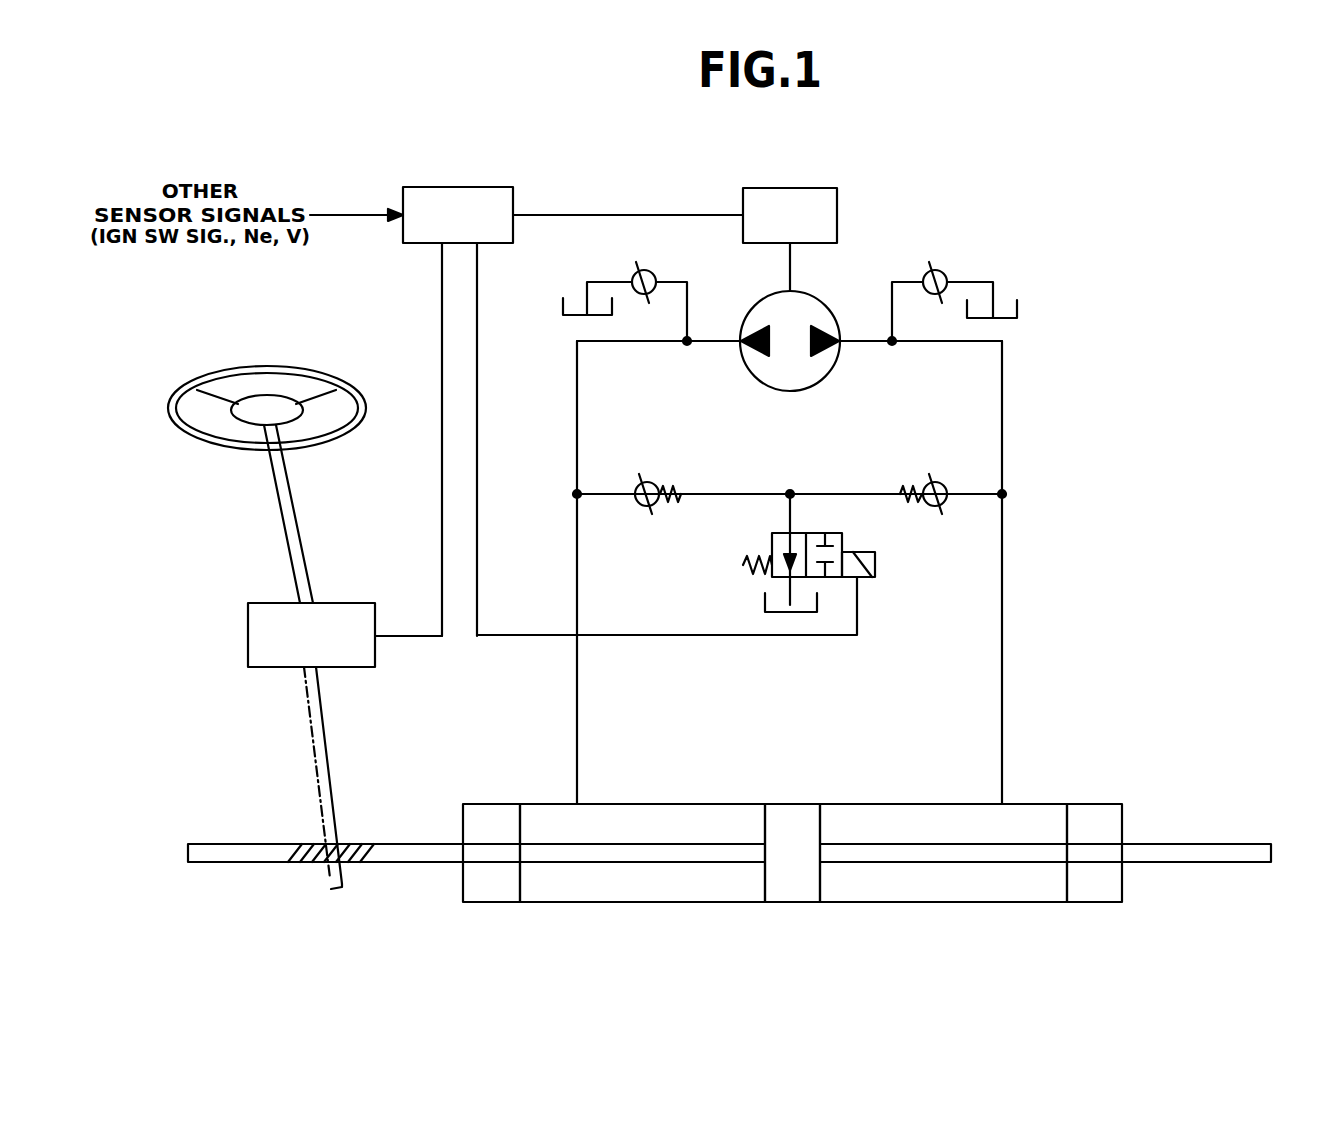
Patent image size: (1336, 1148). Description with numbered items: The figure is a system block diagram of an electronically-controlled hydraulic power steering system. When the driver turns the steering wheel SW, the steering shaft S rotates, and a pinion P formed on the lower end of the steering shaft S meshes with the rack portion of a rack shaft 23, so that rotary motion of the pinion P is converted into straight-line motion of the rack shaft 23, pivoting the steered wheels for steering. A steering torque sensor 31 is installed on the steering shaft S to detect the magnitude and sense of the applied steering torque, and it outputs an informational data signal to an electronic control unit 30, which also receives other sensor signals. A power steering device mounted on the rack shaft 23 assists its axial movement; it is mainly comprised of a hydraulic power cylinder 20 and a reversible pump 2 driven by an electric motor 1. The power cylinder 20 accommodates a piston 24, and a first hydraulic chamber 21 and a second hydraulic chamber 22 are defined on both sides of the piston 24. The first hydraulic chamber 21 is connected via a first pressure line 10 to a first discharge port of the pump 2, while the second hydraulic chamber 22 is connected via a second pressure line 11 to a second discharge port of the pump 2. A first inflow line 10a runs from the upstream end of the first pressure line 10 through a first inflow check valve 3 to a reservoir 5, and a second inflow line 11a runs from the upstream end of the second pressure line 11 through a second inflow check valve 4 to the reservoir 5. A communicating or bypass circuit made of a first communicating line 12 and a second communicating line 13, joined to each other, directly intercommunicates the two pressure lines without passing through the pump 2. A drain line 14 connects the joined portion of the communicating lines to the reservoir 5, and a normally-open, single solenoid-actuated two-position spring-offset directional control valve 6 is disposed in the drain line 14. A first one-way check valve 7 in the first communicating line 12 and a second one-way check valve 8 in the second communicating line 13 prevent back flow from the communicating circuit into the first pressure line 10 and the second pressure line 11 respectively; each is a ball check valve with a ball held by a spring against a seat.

The electric motor 1 is at (795, 188).
The reversible pump 2 is at (825, 382).
The first inflow check valve 3 is at (942, 268).
The second inflow check valve 4 is at (637, 268).
The reservoir 5 is at (563, 310).
The directional control valve 6 is at (835, 520).
The first one-way check valve 7 is at (938, 507).
The second one-way check valve 8 is at (647, 507).
The first pressure line 10 is at (1003, 420).
The first inflow line 10a is at (905, 282).
The second pressure line 11 is at (577, 386).
The second inflow line 11a is at (681, 282).
The first communicating line 12 is at (968, 493).
The second communicating line 13 is at (610, 493).
The drain line 14 is at (788, 585).
The hydraulic power cylinder 20 is at (1047, 803).
The first hydraulic chamber 21 is at (980, 890).
The second hydraulic chamber 22 is at (640, 890).
The rack shaft 23 is at (1207, 843).
The piston 24 is at (797, 890).
The electronic control unit 30 is at (457, 187).
The steering torque sensor 31 is at (248, 632).
The steering wheel SW is at (243, 367).
The steering shaft S is at (283, 516).
The pinion P is at (338, 842).